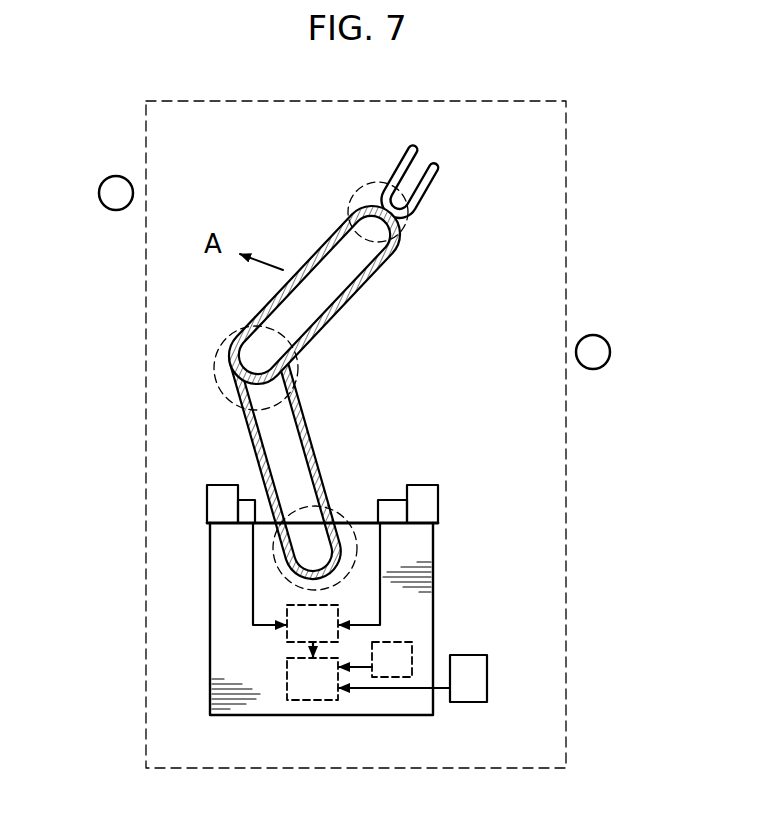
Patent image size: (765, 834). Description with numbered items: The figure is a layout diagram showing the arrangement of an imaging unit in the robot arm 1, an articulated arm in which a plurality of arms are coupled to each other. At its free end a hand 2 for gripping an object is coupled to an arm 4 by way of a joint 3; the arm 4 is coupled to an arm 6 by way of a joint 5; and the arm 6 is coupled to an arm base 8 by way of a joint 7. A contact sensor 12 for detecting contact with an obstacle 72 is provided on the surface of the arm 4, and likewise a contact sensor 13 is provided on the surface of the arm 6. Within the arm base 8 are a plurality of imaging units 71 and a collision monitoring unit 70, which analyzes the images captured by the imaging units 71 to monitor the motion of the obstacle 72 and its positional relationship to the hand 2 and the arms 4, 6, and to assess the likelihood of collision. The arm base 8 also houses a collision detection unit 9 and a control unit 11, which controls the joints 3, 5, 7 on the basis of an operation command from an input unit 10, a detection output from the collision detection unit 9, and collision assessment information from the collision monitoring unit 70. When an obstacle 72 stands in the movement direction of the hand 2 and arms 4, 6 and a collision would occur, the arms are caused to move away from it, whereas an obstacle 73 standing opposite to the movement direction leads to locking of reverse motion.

The robot arm 1 is at (567, 195).
The hand 2 is at (430, 203).
The joint 3 is at (412, 227).
The arm 4 is at (360, 271).
The joint 5 is at (298, 377).
The arm 6 is at (321, 454).
The joint 7 is at (343, 517).
The arm base 8 is at (433, 550).
The collision detection unit 9 is at (413, 657).
The input unit 10 is at (487, 668).
The control unit 11 is at (313, 700).
The contact sensor 12 is at (328, 237).
The contact sensor 13 is at (254, 449).
The collision monitoring unit 70 is at (287, 632).
The imaging units 71 is at (207, 492).
The obstacle 72 is at (102, 185).
The obstacle 73 is at (607, 337).